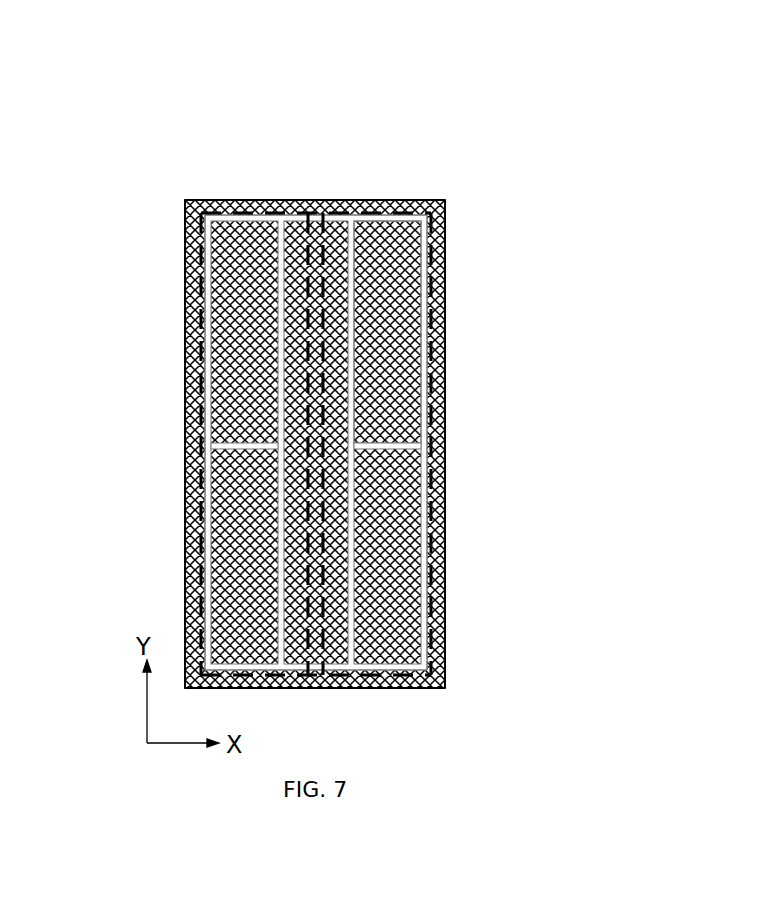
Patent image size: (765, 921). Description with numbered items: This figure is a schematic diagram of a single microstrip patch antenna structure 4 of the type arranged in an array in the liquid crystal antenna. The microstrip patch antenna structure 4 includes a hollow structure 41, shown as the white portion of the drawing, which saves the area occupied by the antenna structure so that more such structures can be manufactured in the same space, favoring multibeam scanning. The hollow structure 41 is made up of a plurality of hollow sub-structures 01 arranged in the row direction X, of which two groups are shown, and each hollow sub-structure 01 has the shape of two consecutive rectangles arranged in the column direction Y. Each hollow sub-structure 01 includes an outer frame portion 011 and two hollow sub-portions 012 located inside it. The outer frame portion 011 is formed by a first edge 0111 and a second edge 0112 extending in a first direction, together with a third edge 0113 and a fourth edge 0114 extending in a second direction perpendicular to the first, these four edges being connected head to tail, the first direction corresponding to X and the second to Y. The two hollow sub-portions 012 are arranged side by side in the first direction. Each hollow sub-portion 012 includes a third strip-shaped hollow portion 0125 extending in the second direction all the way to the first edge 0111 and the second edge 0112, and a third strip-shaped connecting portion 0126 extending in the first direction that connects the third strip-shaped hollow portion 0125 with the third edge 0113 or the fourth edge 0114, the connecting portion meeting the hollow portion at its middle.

The microstrip patch antenna structure 4 is at (316, 192).
The hollow structure 41 is at (400, 192).
The hollow sub-structure 01 is at (188, 282).
The outer frame portion 011 is at (440, 608).
The first edge 0111 is at (211, 192).
The second edge 0112 is at (297, 682).
The third edge 0113 is at (178, 318).
The fourth edge 0114 is at (438, 492).
The hollow sub-portion 012 is at (437, 306).
The third strip-shaped hollow portion 0125 is at (372, 437).
The third strip-shaped connecting portion 0126 is at (438, 362).